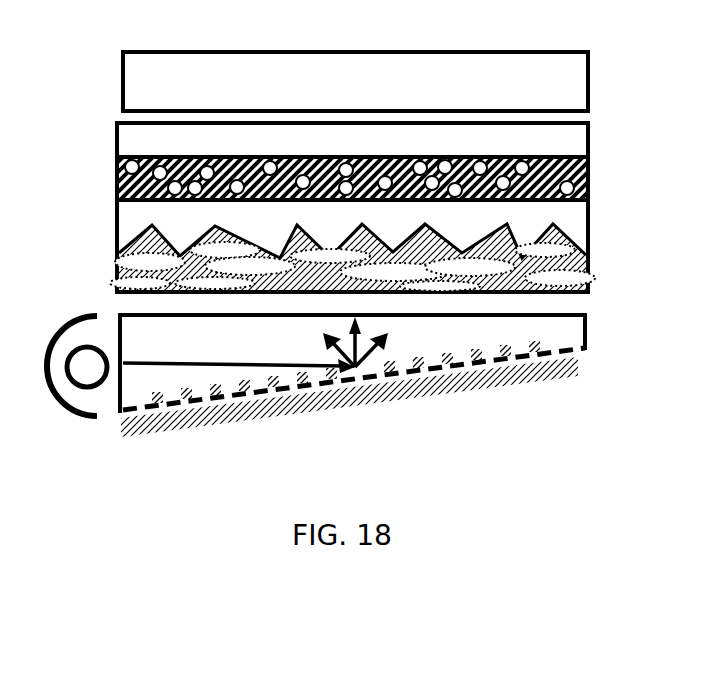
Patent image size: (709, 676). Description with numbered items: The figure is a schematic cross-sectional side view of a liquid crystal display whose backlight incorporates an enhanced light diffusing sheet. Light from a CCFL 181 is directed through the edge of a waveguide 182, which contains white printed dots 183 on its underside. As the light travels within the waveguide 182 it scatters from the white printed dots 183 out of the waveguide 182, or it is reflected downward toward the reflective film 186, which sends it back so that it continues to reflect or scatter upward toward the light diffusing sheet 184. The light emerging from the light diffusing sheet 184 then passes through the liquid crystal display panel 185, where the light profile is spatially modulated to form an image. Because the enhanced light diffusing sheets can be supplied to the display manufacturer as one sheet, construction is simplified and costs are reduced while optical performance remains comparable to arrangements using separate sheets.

The CCFL 181 is at (88, 375).
The waveguide 182 is at (568, 337).
The white printed dots 183 is at (542, 343).
The light diffusing sheet 184 is at (603, 132).
The liquid crystal display panel 185 is at (578, 74).
The reflective film 186 is at (535, 368).